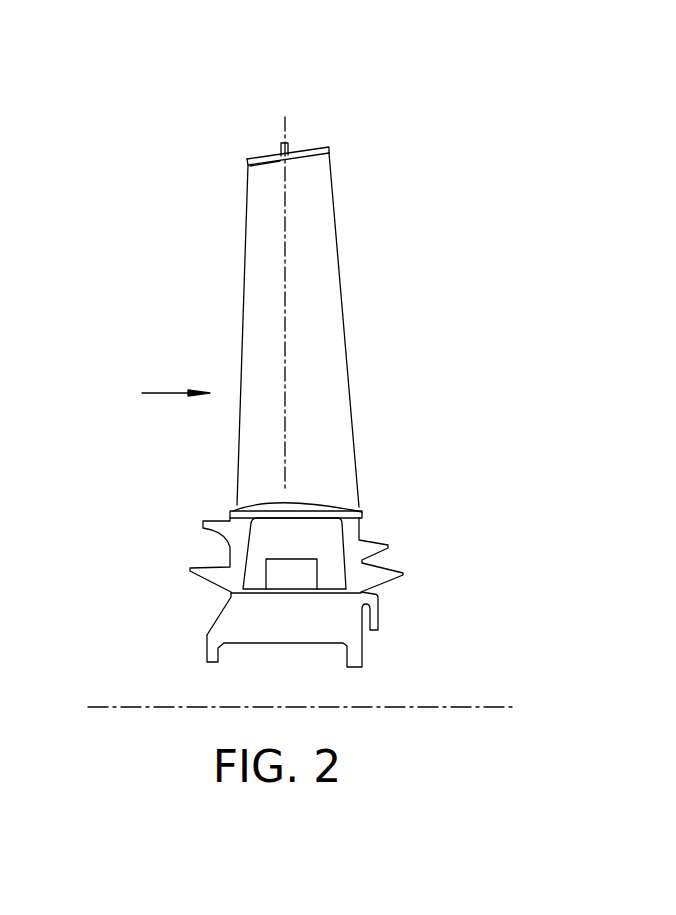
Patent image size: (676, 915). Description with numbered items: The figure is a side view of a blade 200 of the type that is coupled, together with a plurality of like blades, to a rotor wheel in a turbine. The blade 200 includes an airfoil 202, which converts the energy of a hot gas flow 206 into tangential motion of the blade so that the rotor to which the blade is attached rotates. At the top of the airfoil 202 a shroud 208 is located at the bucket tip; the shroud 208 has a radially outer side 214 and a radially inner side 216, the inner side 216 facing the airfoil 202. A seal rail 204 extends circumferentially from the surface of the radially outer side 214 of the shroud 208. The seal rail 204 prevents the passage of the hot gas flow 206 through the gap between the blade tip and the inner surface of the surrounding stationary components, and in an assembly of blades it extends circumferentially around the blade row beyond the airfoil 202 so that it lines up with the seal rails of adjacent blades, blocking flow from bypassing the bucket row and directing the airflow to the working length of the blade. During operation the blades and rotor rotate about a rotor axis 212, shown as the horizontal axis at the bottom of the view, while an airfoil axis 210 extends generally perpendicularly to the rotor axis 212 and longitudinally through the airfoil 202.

The blade 200 is at (410, 90).
The airfoil 202 is at (344, 344).
The seal rail 204 is at (288, 152).
The hot gas flow 206 is at (162, 395).
The shroud 208 is at (245, 150).
The airfoil axis 210 is at (285, 268).
The rotor axis 212 is at (447, 707).
The radially outer side 214 is at (276, 155).
The radially inner side 216 is at (277, 161).